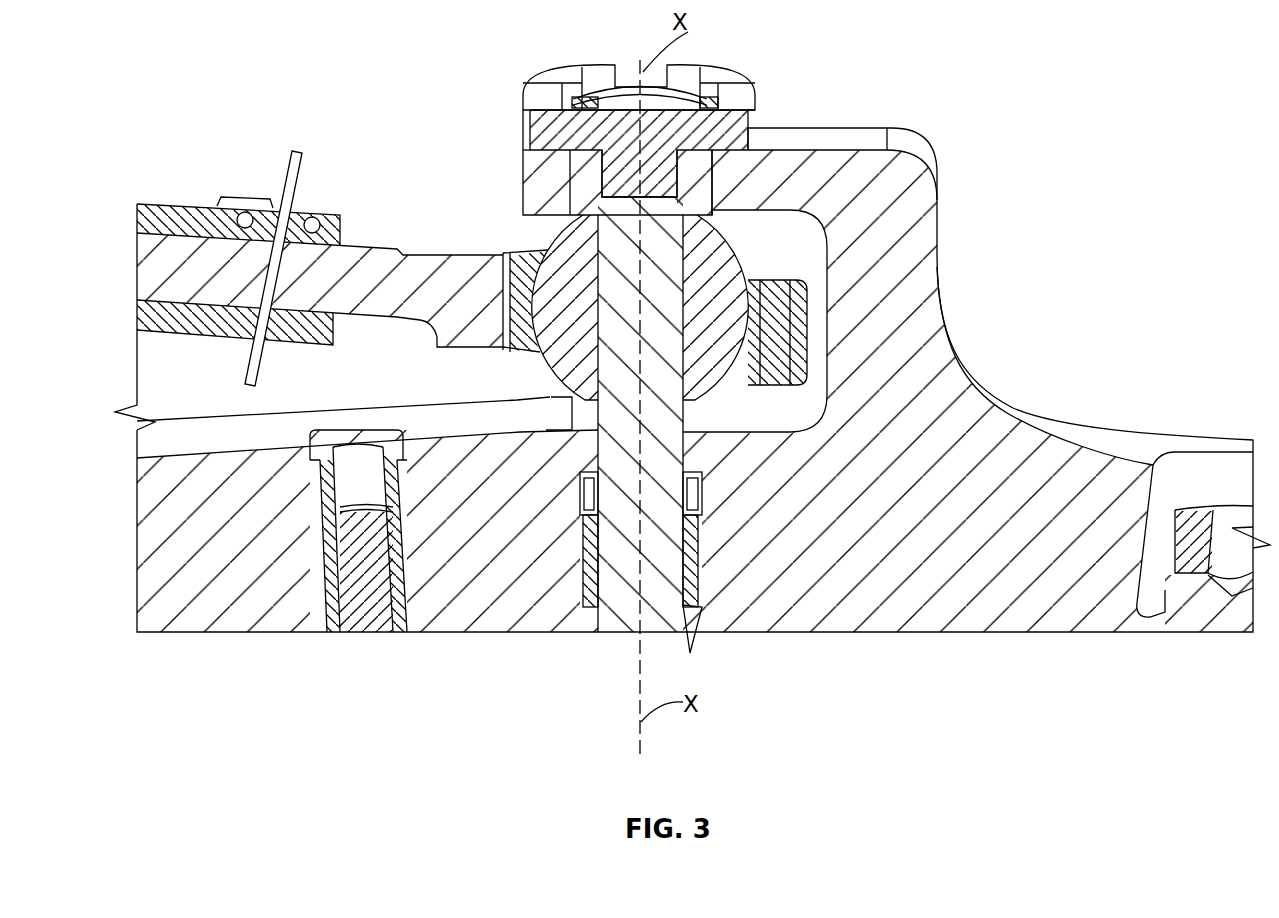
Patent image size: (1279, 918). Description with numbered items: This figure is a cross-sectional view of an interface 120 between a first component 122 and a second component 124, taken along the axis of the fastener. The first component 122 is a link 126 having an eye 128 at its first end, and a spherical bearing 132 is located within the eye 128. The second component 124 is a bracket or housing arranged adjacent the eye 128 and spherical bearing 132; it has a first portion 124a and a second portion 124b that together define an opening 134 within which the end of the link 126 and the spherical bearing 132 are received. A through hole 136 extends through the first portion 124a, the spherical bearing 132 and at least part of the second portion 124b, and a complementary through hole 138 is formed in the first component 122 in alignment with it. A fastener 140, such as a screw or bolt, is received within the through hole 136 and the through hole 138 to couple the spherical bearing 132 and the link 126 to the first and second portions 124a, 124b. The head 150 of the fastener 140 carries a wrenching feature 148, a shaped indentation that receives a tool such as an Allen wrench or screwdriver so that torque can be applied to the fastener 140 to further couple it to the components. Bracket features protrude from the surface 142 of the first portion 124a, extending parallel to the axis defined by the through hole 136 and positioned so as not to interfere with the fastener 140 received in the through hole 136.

The interface 120 is at (574, 64).
The first component 122 is at (262, 188).
The second component 124 is at (940, 226).
The first portion 124a is at (862, 212).
The second portion 124b is at (467, 478).
The link 126 is at (140, 212).
The eye 128 is at (542, 257).
The spherical bearing 132 is at (745, 386).
The opening 134 is at (918, 153).
The through hole 136 is at (735, 165).
The through hole 138 is at (688, 268).
The fastener 140 is at (612, 447).
The surface 142 is at (868, 172).
The wrenching feature 148 is at (597, 122).
The head 150 is at (526, 133).